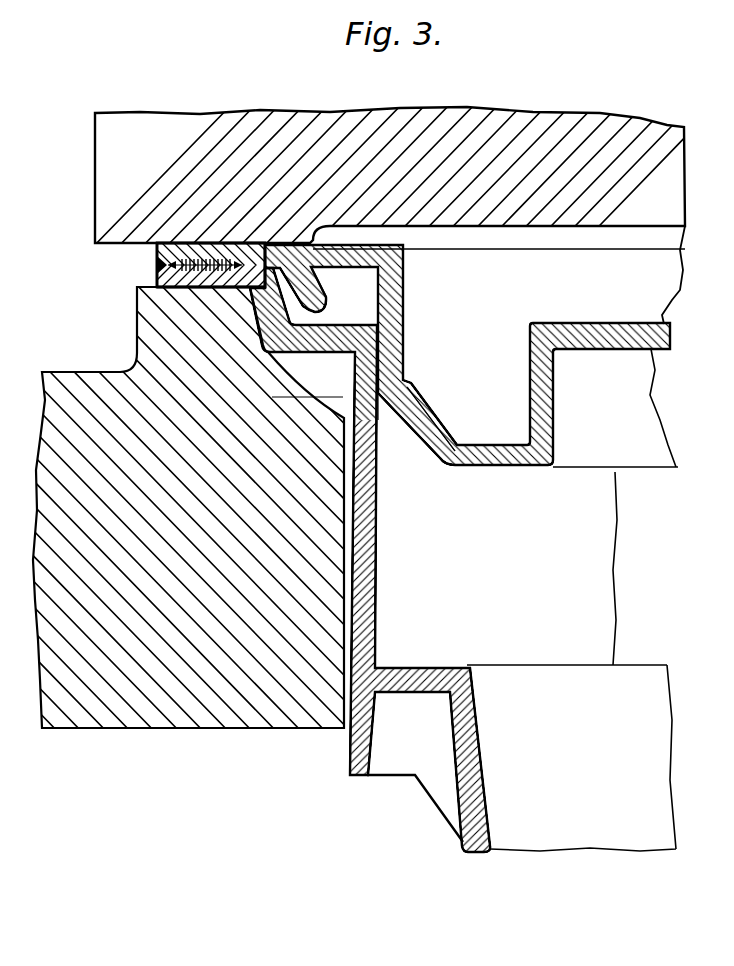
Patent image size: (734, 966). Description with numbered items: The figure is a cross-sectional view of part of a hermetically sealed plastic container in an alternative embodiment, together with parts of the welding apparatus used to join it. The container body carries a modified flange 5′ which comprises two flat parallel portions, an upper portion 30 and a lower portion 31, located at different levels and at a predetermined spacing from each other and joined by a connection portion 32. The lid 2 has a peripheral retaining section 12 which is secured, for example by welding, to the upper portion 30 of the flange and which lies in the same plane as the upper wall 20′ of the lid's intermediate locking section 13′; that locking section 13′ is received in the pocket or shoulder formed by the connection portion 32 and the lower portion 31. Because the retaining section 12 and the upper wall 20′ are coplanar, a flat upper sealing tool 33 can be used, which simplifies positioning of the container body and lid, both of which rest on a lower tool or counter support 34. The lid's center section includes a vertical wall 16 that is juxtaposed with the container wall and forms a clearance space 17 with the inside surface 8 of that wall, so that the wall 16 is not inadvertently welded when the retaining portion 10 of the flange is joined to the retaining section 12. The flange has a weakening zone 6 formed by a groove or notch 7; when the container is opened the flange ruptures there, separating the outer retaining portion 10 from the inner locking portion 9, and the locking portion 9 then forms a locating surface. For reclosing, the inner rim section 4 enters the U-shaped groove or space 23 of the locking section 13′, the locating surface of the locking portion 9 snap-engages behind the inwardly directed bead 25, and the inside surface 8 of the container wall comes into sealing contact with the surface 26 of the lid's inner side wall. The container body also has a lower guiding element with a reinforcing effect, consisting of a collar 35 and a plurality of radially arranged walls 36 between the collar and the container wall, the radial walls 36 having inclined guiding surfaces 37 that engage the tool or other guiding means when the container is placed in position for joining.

The lid 2 is at (600, 323).
The inner rim section 4 is at (404, 381).
The flange 5′ is at (238, 243).
The weakening zone 6 is at (317, 352).
The groove or notch 7 is at (330, 352).
The inside surface 8 is at (379, 390).
The inner locking portion 9 is at (402, 323).
The outer retaining portion 10 is at (190, 286).
The peripheral retaining section 12 is at (157, 252).
The locking section 13′ is at (360, 245).
The vertical wall 16 is at (403, 357).
The clearance space 17 is at (403, 330).
The upper wall 20′ is at (403, 258).
The U-shaped groove or space 23 is at (402, 281).
The bead 25 is at (402, 307).
The inner surface of inner side wall 26 is at (376, 300).
The upper flange portion 30 is at (158, 268).
The lower flange portion 31 is at (376, 455).
The connection portion 32 is at (267, 267).
The upper sealing tool 33 is at (108, 243).
The lower tool or counter support 34 is at (140, 358).
The collar 35 is at (350, 748).
The radial walls 36 is at (393, 760).
The inclined guiding surfaces 37 is at (442, 805).